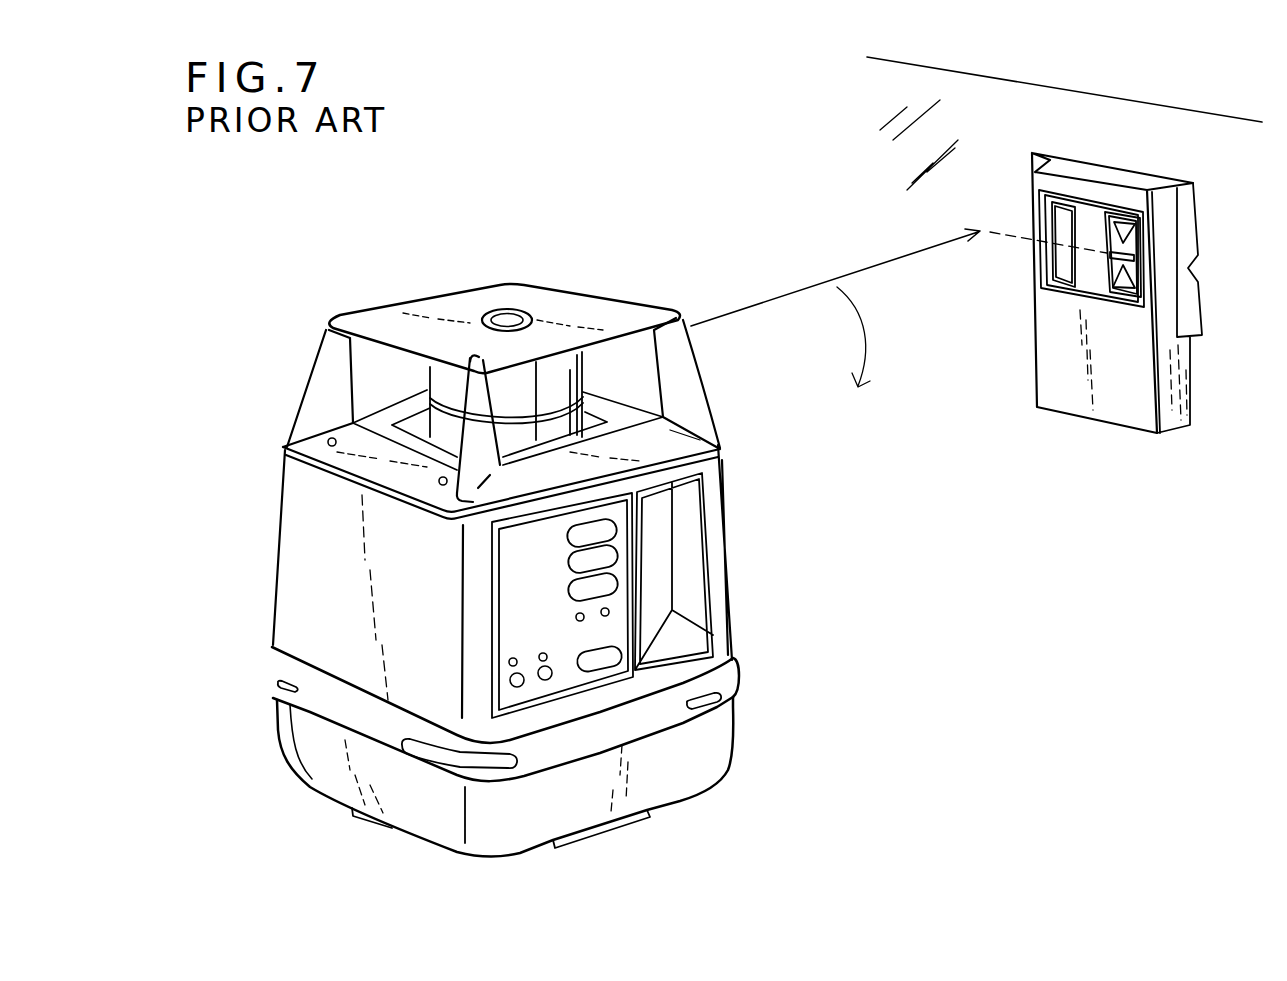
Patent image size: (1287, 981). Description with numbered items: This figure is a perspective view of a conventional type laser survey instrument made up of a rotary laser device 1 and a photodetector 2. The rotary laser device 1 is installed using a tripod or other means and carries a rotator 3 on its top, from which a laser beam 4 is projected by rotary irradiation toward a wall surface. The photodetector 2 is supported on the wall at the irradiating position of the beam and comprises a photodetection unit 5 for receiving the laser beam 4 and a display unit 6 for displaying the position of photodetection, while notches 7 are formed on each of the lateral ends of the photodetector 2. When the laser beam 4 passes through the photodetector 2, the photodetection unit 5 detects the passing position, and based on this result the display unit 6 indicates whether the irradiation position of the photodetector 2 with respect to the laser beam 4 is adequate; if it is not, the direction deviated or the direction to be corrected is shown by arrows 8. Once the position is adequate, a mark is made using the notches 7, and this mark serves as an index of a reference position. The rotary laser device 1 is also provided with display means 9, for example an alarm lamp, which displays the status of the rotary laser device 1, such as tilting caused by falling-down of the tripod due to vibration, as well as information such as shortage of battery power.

The rotary laser device 1 is at (744, 574).
The photodetector 2 is at (1123, 444).
The rotator 3 is at (565, 370).
The laser beam 4 is at (776, 298).
The photodetection unit 5 is at (1060, 223).
The display unit 6 is at (1113, 223).
The notches 7 is at (1112, 256).
The arrows 8 is at (1130, 282).
The display means 9 is at (527, 617).